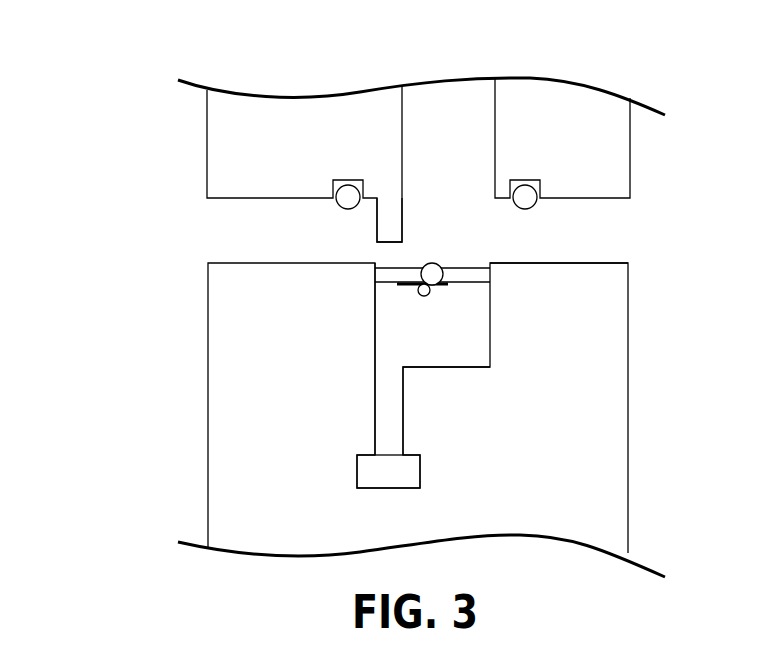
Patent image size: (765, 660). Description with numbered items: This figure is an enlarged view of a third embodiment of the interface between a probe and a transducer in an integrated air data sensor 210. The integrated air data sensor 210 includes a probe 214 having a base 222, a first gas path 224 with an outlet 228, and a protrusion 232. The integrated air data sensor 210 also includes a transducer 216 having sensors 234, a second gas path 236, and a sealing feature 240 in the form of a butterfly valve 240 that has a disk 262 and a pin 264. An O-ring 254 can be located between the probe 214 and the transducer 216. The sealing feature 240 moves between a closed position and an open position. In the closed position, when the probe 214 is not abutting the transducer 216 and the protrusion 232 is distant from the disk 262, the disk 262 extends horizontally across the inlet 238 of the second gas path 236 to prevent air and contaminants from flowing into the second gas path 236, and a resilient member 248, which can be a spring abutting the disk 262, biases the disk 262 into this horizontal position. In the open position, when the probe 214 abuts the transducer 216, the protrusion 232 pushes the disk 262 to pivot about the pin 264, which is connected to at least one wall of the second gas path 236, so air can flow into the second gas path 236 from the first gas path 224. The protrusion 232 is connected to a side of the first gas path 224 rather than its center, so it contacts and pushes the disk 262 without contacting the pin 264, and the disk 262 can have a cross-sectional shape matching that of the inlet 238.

The integrated air data sensor 210 is at (66, 204).
The probe 214 is at (161, 143).
The transducer 216 is at (161, 460).
The base 222 is at (323, 105).
The first gas path 224 is at (430, 98).
The outlet 228 is at (469, 114).
The protrusion 232 is at (390, 205).
The sensors 234 is at (370, 478).
The second gas path 236 is at (420, 350).
The inlet 238 is at (362, 296).
The sealing feature 240 is at (361, 262).
The resilient member 248 is at (440, 290).
The O-ring 254 is at (348, 193).
The disk 262 is at (475, 265).
The pin 264 is at (430, 263).